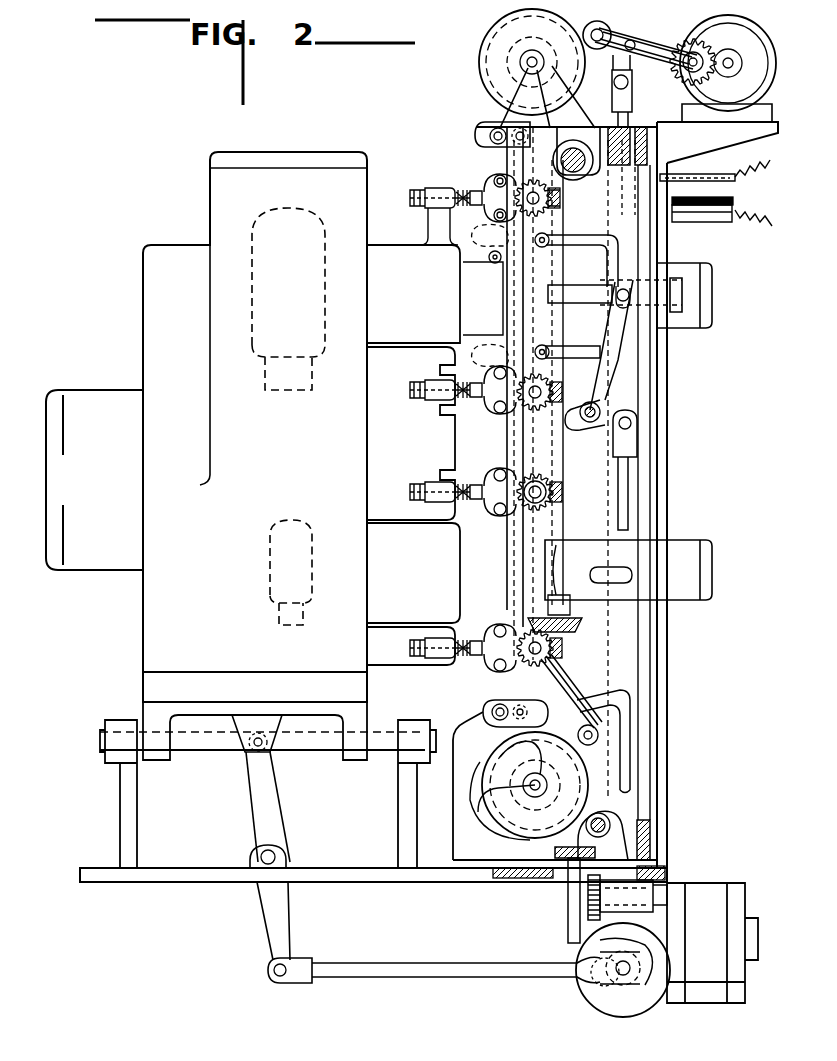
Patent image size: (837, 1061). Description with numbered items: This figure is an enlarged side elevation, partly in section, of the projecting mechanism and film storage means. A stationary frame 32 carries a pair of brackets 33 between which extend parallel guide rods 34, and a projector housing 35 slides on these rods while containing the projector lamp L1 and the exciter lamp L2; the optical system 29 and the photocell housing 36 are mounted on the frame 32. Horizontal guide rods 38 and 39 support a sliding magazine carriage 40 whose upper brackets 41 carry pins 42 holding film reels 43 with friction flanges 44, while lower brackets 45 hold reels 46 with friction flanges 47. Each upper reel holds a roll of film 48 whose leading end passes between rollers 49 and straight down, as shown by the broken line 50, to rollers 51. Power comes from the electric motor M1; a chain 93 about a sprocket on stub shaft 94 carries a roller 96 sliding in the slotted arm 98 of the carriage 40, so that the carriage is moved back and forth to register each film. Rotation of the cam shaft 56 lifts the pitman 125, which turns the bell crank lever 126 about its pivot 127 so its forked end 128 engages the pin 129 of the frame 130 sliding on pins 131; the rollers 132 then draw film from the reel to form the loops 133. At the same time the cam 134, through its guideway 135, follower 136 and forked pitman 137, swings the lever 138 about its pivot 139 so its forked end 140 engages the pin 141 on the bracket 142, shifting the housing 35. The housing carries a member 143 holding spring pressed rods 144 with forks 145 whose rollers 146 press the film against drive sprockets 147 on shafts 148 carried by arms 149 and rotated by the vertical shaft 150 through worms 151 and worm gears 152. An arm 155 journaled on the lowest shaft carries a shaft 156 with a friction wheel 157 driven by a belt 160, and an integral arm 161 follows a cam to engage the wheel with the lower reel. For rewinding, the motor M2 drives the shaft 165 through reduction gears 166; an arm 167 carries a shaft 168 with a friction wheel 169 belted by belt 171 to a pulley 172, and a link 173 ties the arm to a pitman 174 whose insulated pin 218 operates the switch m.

The optical system 29 is at (712, 296).
The stationary frame 32 is at (400, 882).
The brackets 33 is at (132, 812).
The guide rods 34 is at (315, 750).
The projector housing 35 is at (150, 292).
The photocell housing 36 is at (688, 546).
The horizontal guide rod 38 is at (580, 148).
The horizontal guide rod 39 is at (604, 816).
The magazine frame or carriage 40 is at (632, 127).
The brackets 41 is at (577, 96).
The pin 42 is at (525, 80).
The film reel 43 is at (497, 47).
The friction flange 44 is at (480, 80).
The lower brackets 45 is at (457, 728).
The film reel 46 is at (505, 766).
The friction flange 47 is at (480, 806).
The film 48 is at (502, 22).
The rollers 49 is at (480, 130).
The broken line 50 is at (508, 240).
The rollers 51 is at (485, 706).
The cam shaft 56 is at (612, 980).
The second chain 93 is at (590, 897).
The second stub shaft 94 is at (630, 900).
The roller 96 is at (575, 888).
The arm 98 is at (568, 922).
The pitman 125 is at (630, 468).
The bell crank lever 126 is at (640, 410).
The pivot 127 is at (590, 423).
The forked upper end 128 is at (615, 310).
The pin 129 is at (625, 290).
The frame 130 is at (568, 240).
The pins 131 is at (570, 296).
The rollers 132 is at (552, 346).
The loops 133 is at (478, 238).
The cam 134 is at (646, 1005).
The guideway 135 is at (655, 970).
The follower 136 is at (598, 980).
The forked pitman 137 is at (500, 980).
The lever 138 is at (290, 925).
The pivot 139 is at (278, 857).
The forked upper end 140 is at (250, 768).
The pin 141 is at (272, 760).
The bracket 142 is at (245, 715).
The member 143 is at (440, 430).
The spring pressed rods 144 is at (408, 198).
The fork 145 is at (450, 182).
The rollers 146 is at (492, 172).
The drive sprockets 147 is at (512, 140).
The shafts 148 is at (548, 486).
The arms 149 is at (548, 494).
The vertical shaft 150 is at (556, 253).
The worms 151 is at (560, 196).
The worm gears 152 is at (530, 185).
The arm 155 is at (580, 712).
The shaft 156 is at (600, 735).
The friction wheel 157 is at (600, 740).
The belt 160 is at (530, 668).
The arm 161 is at (628, 782).
The shaft 165 is at (705, 78).
The reduction gears 166 is at (730, 20).
The arm 167 is at (640, 40).
The shaft 168 is at (592, 26).
The friction wheel 169 is at (630, 40).
The belt 171 is at (660, 48).
The pulley 172 is at (698, 50).
The link 173 is at (630, 68).
The pitman 174 is at (618, 100).
The insulated pin 218 is at (668, 172).
The projector lamp L1 is at (315, 220).
The exciter lamp L2 is at (312, 532).
The electric motor M1 is at (722, 888).
The motor M2 is at (752, 30).
The switch m is at (700, 196).